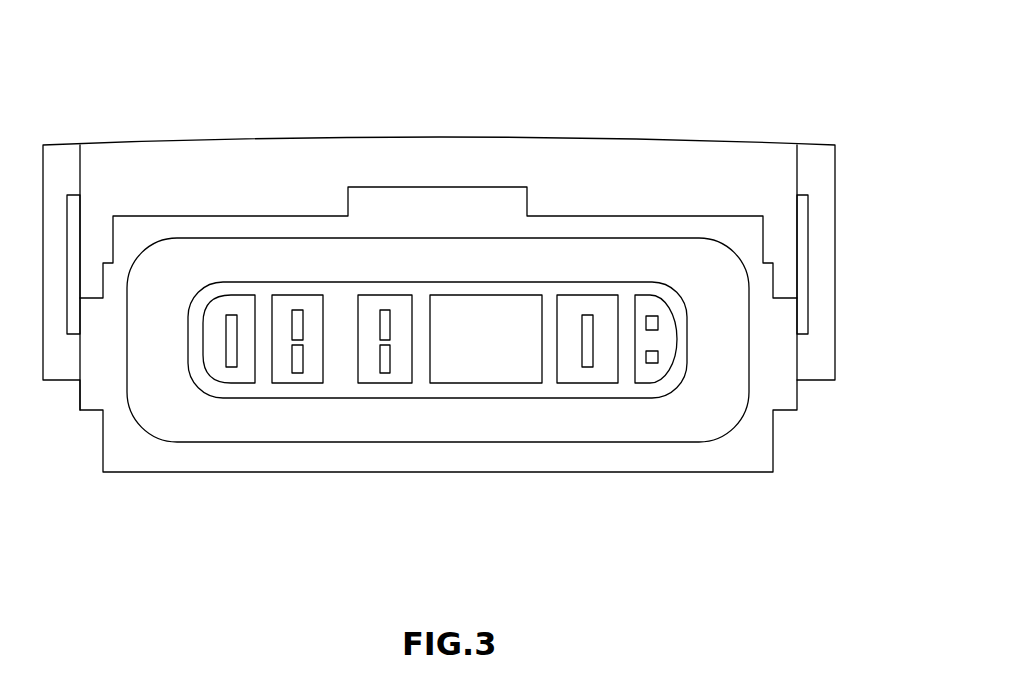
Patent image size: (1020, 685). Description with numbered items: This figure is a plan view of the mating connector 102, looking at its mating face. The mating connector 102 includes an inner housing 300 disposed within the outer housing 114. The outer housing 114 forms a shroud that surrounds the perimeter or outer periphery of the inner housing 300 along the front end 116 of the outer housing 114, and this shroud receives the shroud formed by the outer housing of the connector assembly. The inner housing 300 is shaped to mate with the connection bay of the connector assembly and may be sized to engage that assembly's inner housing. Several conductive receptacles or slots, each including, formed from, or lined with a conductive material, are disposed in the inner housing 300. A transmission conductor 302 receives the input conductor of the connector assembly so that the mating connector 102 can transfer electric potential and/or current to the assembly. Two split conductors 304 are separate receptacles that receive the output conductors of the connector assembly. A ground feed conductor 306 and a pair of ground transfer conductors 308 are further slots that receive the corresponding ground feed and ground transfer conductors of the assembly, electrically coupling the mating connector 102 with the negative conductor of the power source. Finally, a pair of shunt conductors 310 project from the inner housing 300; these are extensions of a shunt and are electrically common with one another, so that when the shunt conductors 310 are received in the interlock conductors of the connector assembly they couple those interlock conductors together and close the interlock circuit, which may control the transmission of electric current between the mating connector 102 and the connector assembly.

The mating connector 102 is at (790, 122).
The outer housing 114 is at (728, 228).
The front end 116 is at (498, 452).
The inner housing 300 is at (642, 397).
The transmission conductor 302 is at (582, 340).
The split conductors 304 is at (390, 357).
The ground feed conductor 306 is at (228, 335).
The ground transfer conductors 308 is at (303, 355).
The shunt conductors 310 is at (658, 322).